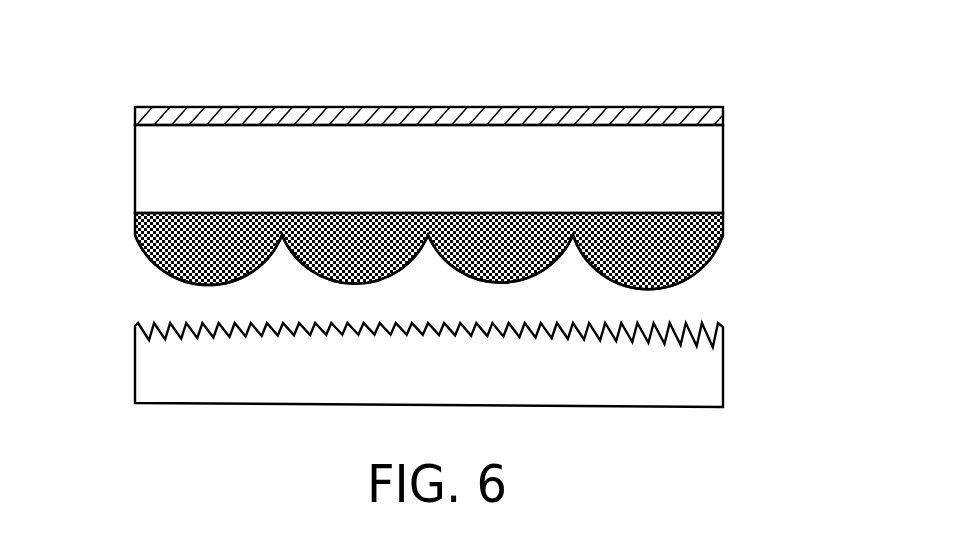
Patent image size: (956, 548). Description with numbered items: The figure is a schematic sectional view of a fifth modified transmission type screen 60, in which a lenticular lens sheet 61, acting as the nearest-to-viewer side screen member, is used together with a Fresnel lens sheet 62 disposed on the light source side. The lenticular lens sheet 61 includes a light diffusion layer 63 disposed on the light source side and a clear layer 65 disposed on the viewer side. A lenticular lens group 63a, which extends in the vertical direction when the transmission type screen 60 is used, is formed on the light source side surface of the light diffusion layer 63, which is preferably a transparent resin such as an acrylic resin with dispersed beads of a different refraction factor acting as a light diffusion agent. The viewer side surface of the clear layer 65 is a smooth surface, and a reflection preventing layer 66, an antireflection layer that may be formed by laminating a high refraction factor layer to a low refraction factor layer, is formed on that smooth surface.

The transmission type screen 60 is at (572, 77).
The lenticular lens sheet 61 is at (95, 198).
The Fresnel lens sheet 62 is at (120, 372).
The light diffusion layer 63 is at (710, 232).
The lenticular lens group 63a is at (712, 259).
The clear layer 65 is at (717, 188).
The reflection preventing layer 66 is at (725, 116).